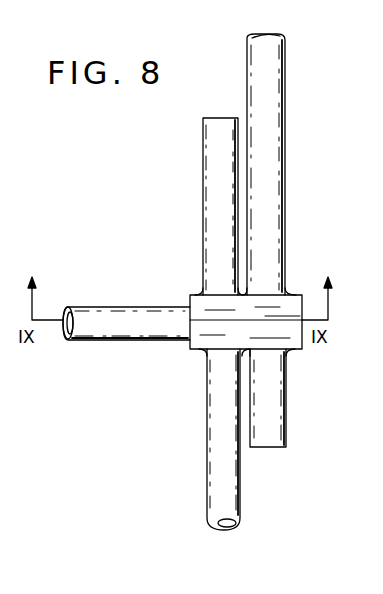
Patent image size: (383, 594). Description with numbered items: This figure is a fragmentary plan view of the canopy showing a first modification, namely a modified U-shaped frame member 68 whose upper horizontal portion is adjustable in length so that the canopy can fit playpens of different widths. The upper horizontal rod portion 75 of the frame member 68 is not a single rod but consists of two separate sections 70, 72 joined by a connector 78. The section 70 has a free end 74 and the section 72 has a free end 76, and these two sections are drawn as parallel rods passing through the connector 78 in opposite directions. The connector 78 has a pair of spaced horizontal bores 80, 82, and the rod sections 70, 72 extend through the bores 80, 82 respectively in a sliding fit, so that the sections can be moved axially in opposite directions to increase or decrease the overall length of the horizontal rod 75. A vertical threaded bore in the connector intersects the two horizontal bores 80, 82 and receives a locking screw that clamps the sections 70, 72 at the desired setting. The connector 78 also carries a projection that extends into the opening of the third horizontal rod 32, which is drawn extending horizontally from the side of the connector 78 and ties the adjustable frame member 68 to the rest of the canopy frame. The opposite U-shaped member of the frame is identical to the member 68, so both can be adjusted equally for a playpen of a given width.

The third horizontal rod 32 is at (120, 334).
The U-shaped frame member 68 is at (145, 254).
The section 70 is at (218, 198).
The section 72 is at (276, 113).
The free end 74 is at (208, 128).
The upper horizontal rod portion 75 is at (194, 452).
The free end 76 is at (274, 440).
The connector 78 is at (190, 348).
The horizontal bore 80 is at (203, 292).
The horizontal bore 82 is at (282, 290).